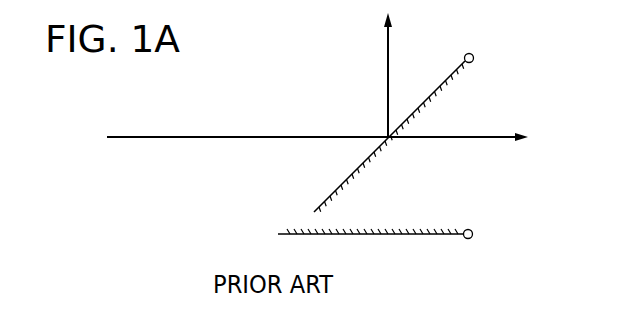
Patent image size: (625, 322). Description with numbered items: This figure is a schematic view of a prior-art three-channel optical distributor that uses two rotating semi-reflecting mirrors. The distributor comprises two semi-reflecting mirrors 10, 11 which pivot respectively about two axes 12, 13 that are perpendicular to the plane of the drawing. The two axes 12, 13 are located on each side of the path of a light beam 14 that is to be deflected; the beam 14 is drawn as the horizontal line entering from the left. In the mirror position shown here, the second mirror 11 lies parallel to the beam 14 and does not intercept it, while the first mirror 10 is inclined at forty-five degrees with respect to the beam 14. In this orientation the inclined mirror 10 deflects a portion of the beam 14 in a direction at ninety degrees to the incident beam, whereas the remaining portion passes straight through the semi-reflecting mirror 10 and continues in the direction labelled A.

The semi-reflecting mirror 10 is at (455, 76).
The semi-reflecting mirror 11 is at (433, 232).
The axis 12 is at (474, 55).
The axis 13 is at (473, 234).
The light beam 14 is at (178, 138).